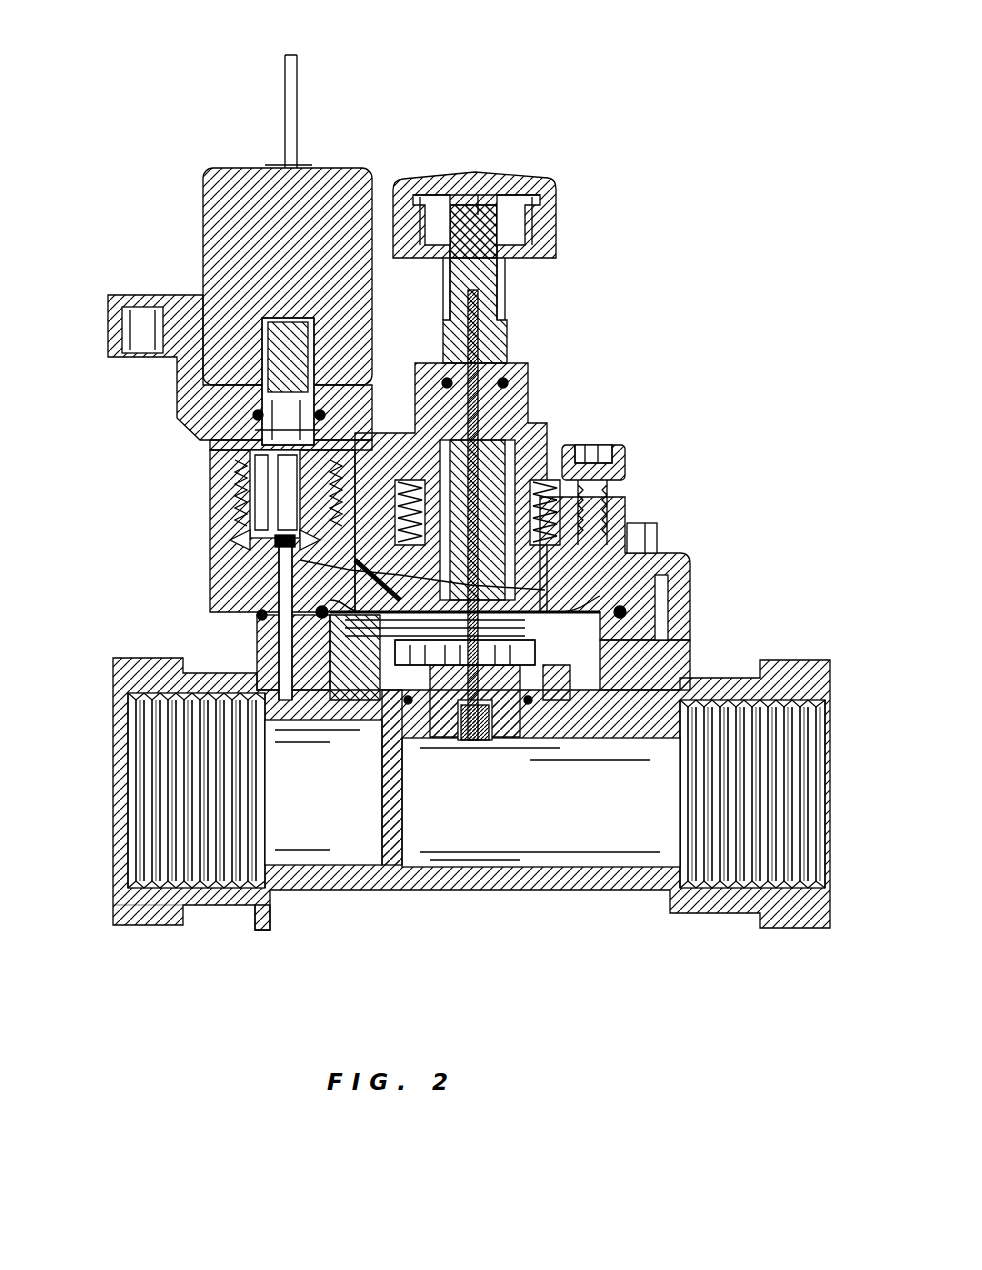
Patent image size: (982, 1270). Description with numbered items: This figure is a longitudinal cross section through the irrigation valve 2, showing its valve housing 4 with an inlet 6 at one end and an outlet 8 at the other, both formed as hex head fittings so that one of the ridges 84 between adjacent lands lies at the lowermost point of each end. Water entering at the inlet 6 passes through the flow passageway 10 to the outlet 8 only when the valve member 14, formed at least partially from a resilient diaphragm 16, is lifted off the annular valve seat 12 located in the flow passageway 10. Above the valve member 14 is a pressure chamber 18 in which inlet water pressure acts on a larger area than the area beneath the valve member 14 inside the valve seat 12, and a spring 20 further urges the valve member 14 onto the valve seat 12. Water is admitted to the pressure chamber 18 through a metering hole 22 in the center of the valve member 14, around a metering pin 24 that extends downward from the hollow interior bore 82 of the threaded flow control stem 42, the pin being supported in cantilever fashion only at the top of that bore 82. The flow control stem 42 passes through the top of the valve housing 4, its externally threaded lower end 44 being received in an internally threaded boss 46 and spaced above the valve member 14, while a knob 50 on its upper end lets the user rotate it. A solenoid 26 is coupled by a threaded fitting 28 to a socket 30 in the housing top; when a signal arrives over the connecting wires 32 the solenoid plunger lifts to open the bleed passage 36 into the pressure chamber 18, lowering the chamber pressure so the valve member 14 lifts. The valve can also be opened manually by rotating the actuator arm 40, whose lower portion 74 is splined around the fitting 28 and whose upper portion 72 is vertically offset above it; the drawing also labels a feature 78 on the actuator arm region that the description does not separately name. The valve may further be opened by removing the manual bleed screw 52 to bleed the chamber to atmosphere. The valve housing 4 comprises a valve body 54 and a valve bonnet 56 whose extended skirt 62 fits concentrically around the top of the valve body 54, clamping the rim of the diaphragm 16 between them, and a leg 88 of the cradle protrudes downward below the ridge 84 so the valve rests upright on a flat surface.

The irrigation valve 2 is at (675, 252).
The valve housing 4 is at (553, 428).
The inlet 6 is at (830, 673).
The outlet 8 is at (122, 660).
The flow passageway 10 is at (604, 825).
The annular valve seat 12 is at (356, 712).
The valve member 14 is at (392, 770).
The resilient diaphragm 16 is at (655, 545).
The pressure chamber 18 is at (625, 510).
The spring 20 is at (330, 588).
The metering hole 22 is at (432, 700).
The metering pin 24 is at (482, 352).
The solenoid 26 is at (204, 172).
The threaded fitting 28 is at (245, 448).
The socket 30 is at (218, 528).
The connecting wires 32 is at (300, 82).
The bleed passage 36 is at (368, 540).
The actuator arm 40 is at (102, 298).
The flow control stem 42 is at (505, 320).
The lower end of flow control stem 44 is at (525, 720).
The internally threaded boss 46 is at (575, 460).
The knob 50 is at (518, 180).
The manual bleed screw 52 is at (625, 455).
The valve body 54 is at (722, 668).
The valve bonnet 56 is at (690, 560).
The extended skirt 62 is at (690, 625).
The upper portion of actuator arm 72 is at (188, 300).
The lower portion of actuator arm 74 is at (185, 432).
The slot 78 is at (142, 302).
The hollow interior bore 82 is at (548, 440).
The ridge 84 is at (155, 925).
The leg 88 is at (263, 932).